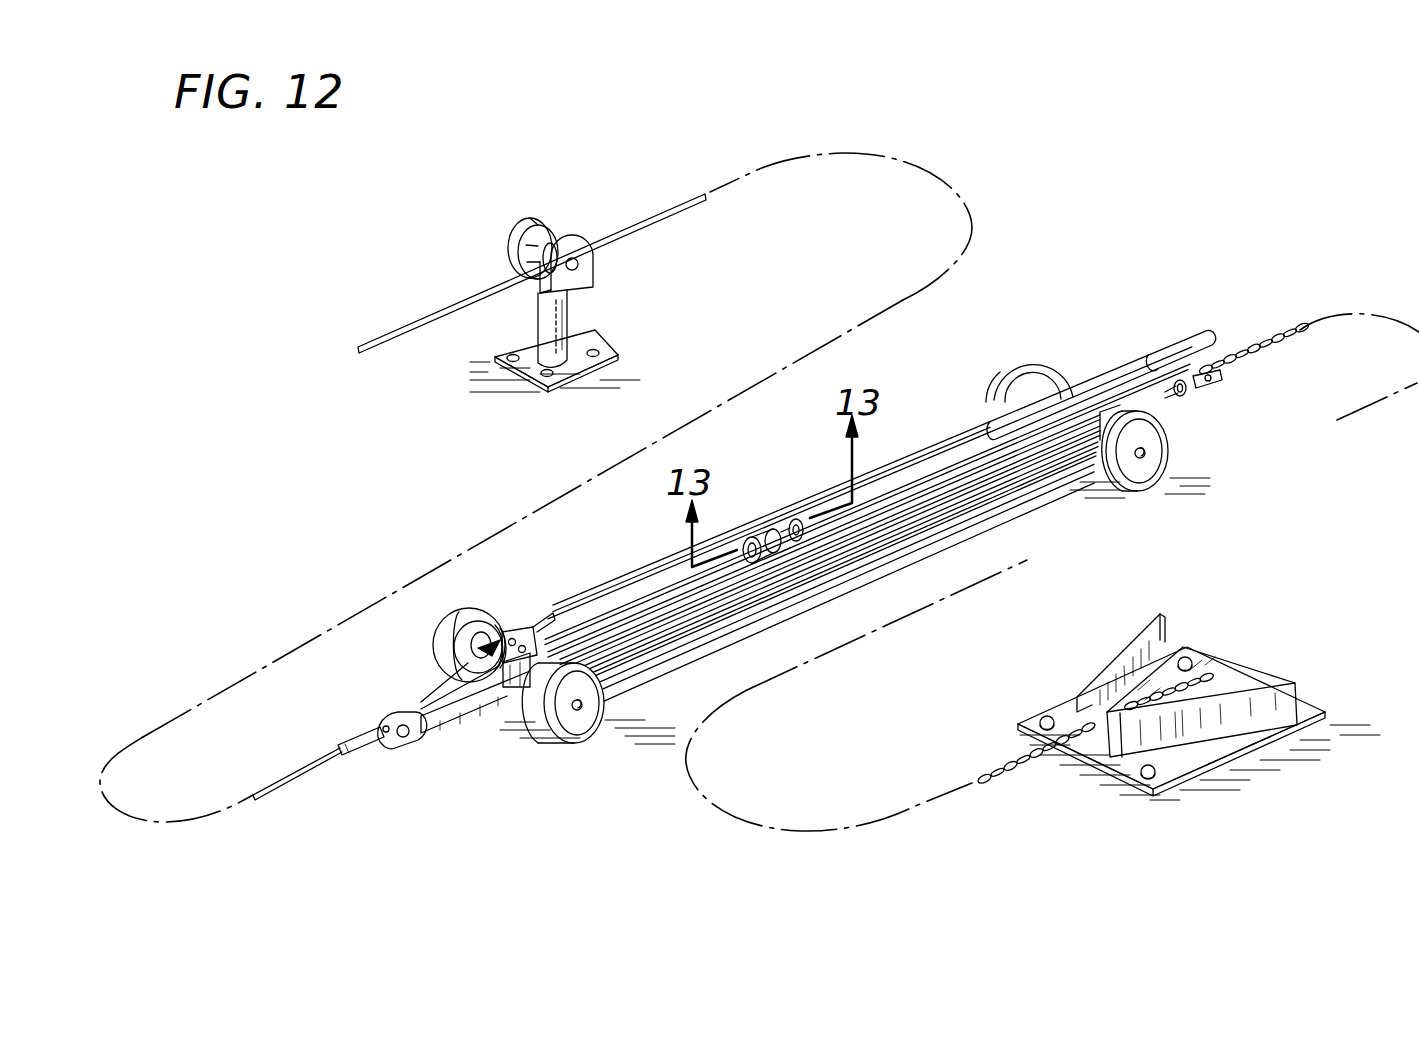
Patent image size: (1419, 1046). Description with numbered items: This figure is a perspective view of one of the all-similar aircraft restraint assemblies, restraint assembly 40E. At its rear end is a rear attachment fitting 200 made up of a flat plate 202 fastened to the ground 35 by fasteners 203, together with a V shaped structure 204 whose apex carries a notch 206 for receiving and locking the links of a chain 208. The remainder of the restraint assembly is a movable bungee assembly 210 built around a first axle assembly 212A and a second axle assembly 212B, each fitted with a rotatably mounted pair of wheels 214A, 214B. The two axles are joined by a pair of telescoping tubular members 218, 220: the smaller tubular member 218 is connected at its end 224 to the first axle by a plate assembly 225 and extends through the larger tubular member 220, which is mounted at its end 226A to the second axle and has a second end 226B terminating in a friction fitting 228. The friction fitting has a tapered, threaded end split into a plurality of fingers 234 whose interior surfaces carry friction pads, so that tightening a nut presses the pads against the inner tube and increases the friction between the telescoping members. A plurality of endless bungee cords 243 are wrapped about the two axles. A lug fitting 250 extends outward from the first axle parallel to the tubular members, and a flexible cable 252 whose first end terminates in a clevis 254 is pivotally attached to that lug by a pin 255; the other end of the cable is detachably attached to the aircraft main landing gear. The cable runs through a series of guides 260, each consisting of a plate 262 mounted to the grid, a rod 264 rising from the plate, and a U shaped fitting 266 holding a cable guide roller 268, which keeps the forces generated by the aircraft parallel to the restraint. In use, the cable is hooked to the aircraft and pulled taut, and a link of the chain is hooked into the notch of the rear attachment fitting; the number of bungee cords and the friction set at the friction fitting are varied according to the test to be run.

The ground 35 is at (505, 377).
The restraint assembly 40E is at (1117, 217).
The rear attachment fitting 200 is at (1205, 643).
The flat plate 202 is at (1240, 665).
The fasteners 203 is at (1160, 778).
The V shaped structure 204 is at (1130, 640).
The notch 206 is at (1098, 693).
The chain 208 is at (1275, 345).
The movable bungee assembly 210 is at (722, 645).
The first axle assembly 212A is at (523, 735).
The second axle assembly 212B is at (1060, 380).
The wheels 214A is at (440, 635).
The wheels 214B is at (1017, 383).
The tubular member 218 is at (613, 590).
The tubular member 220 is at (1130, 360).
The end 224 is at (525, 630).
The plate assembly 225 is at (467, 667).
The end 226A is at (1186, 389).
The second end 226B is at (803, 518).
The friction fitting 228 is at (742, 541).
The fingers 234 is at (778, 548).
The endless bungee cords 243 is at (880, 575).
The lug fitting 250 is at (482, 718).
The flexible cable 252 is at (680, 195).
The clevis 254 is at (398, 748).
The pin 255 is at (423, 740).
The guides 260 is at (571, 313).
The plate 262 is at (615, 345).
The rod 264 is at (527, 307).
The U shaped fitting 266 is at (598, 260).
The roller 268 is at (552, 231).